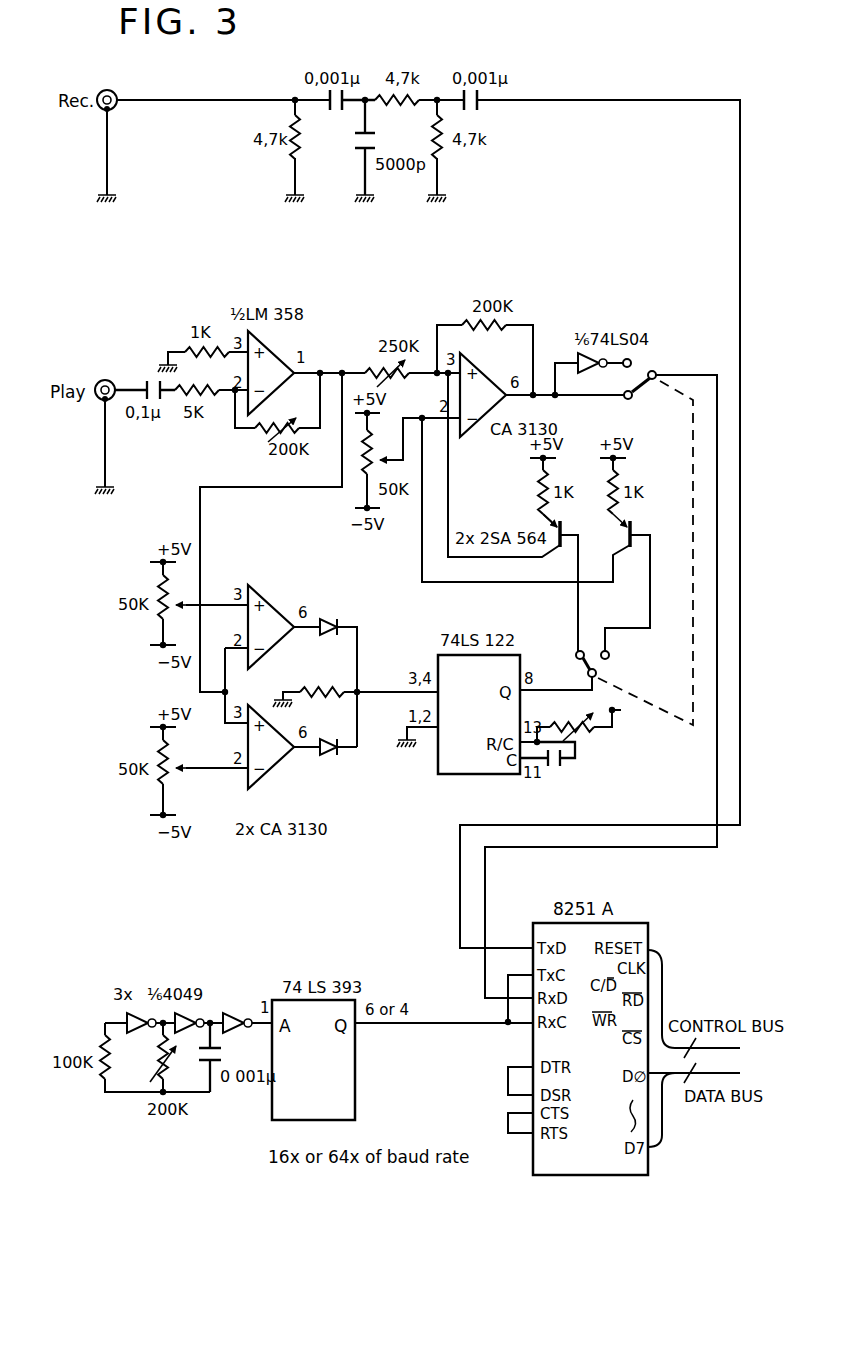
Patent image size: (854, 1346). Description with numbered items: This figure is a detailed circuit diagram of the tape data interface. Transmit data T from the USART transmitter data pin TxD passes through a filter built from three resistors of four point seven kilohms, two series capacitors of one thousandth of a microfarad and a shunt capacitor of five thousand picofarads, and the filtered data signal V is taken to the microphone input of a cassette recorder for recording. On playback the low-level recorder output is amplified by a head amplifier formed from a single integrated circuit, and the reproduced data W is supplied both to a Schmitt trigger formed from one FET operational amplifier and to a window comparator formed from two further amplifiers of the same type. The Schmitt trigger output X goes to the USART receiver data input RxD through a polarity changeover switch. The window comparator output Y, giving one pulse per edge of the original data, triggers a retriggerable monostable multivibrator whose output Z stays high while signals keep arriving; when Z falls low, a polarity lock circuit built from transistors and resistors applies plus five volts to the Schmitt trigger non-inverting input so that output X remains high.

The data signal V is at (175, 100).
The data T is at (641, 100).
The reproduced data W is at (342, 373).
The output of the Schmitt trigger circuit X is at (704, 374).
The window comparator output Y is at (395, 692).
The output of the monostable multivibrator Z is at (568, 682).